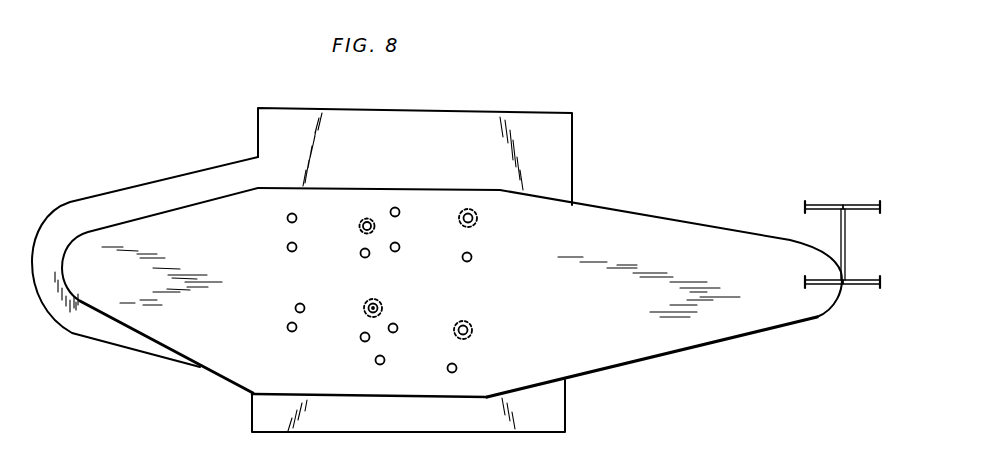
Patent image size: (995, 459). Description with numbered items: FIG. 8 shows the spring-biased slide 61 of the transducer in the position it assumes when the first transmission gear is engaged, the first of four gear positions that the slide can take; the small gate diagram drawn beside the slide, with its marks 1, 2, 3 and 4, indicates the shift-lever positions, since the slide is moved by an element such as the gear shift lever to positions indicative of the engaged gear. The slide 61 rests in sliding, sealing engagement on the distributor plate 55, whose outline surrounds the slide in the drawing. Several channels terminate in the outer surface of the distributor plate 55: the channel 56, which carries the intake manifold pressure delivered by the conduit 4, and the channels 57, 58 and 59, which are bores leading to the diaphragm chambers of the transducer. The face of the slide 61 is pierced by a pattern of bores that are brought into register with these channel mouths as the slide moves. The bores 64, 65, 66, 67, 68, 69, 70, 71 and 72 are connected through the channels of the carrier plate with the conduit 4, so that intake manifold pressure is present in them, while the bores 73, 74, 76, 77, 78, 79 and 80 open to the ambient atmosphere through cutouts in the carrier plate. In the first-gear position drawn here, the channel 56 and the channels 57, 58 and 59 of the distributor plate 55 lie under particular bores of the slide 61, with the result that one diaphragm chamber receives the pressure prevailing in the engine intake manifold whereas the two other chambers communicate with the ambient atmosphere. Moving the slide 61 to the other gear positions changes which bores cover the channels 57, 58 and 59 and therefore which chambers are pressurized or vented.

The first corner of reference frame 1 is at (819, 295).
The second corner of reference frame 2 is at (861, 297).
The third corner of reference frame 3 is at (818, 193).
The conduit 4 is at (865, 193).
The distributor plate 55 is at (562, 143).
The channel 56 is at (377, 299).
The channel 57 is at (472, 336).
The channel 58 is at (361, 219).
The channel 59 is at (477, 213).
The slide 61 is at (730, 327).
The bore 64 is at (397, 331).
The bore 65 is at (399, 208).
The bore 66 is at (360, 337).
The bore 67 is at (457, 368).
The bore 68 is at (472, 258).
The bore 69 is at (287, 247).
The bore 70 is at (288, 329).
The bore 71 is at (376, 363).
The bore 72 is at (406, 239).
The bore 73 is at (362, 226).
The bore 74 is at (467, 325).
The bore 76 is at (287, 218).
The bore 77 is at (295, 308).
The bore 78 is at (361, 255).
The bore 79 is at (382, 308).
The bore 80 is at (473, 222).